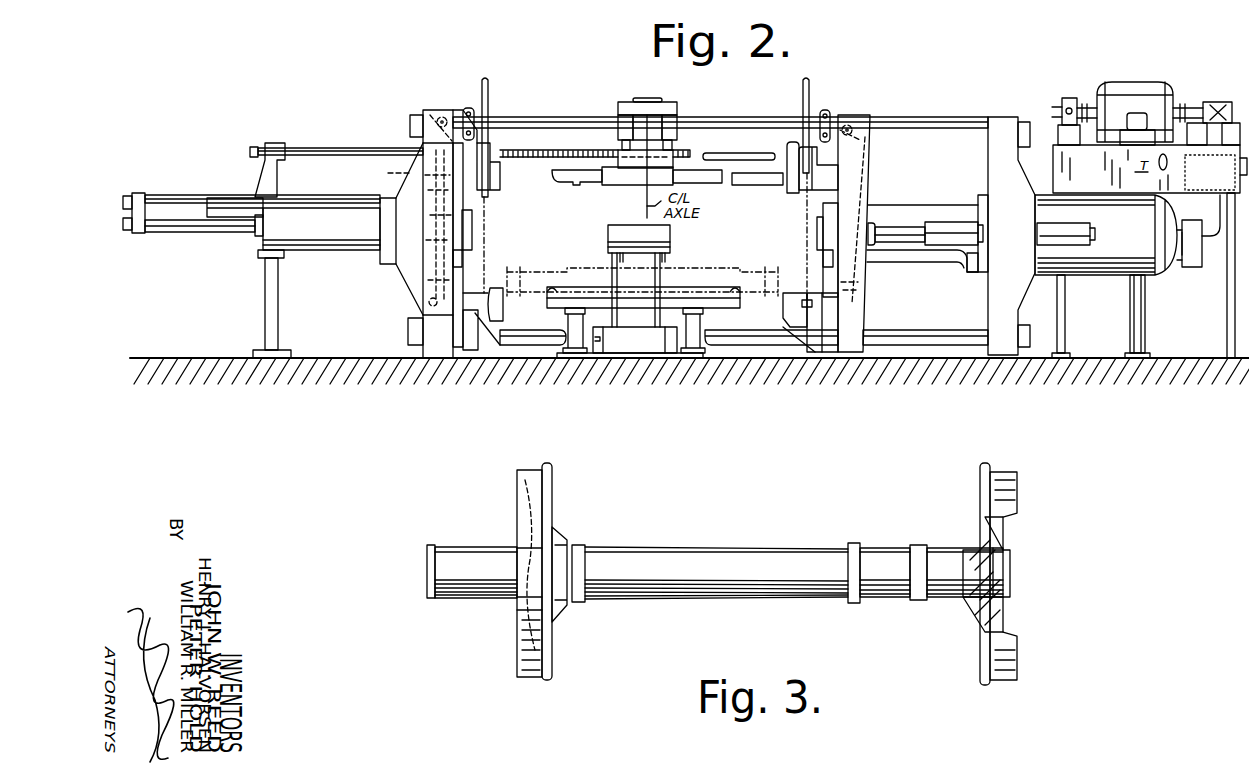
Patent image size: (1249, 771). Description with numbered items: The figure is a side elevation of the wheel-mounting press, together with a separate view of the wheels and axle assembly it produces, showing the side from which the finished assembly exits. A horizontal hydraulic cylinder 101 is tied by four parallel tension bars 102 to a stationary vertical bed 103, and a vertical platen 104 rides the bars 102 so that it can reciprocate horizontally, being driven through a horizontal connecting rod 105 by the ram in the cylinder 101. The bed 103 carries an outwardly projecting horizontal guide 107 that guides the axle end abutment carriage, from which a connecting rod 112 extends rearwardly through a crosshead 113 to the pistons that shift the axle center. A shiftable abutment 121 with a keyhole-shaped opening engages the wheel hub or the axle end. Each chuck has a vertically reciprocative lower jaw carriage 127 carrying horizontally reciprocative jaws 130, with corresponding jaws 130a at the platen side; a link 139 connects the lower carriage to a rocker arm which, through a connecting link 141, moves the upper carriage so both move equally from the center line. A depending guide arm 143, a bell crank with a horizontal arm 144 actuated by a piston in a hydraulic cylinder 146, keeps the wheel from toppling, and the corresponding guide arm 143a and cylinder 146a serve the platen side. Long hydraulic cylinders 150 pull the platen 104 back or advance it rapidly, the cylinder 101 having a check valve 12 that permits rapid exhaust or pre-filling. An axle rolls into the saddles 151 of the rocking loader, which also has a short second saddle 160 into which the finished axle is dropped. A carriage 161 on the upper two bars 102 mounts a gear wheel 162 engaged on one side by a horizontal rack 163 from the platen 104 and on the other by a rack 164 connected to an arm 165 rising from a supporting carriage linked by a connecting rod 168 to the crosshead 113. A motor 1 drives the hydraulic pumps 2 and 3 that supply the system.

The motor 1 is at (1134, 80).
The hydraulic pump 2 is at (1070, 98).
The hydraulic pump 3 is at (1220, 100).
The check valve 12 is at (1190, 268).
The hydraulic cylinder 101 is at (1090, 272).
The tension bars 102 is at (933, 119).
The stationary vertical bed 103 is at (407, 273).
The vertical platen 104 is at (858, 318).
The horizontal connecting rod 105 is at (917, 207).
The horizontal guide 107 is at (312, 246).
The connecting rod 112 is at (172, 233).
The crosshead 113 is at (131, 217).
The abutment 121 is at (474, 218).
The lower jaw carriage 127 is at (470, 353).
The horizontally reciprocative jaws 130 is at (504, 306).
The horizontally reciprocative jaws 130a is at (785, 302).
The link 139 is at (384, 173).
The connecting link 141 is at (452, 128).
The depending guide arm 143 is at (501, 178).
The depending guide arm 143a is at (790, 190).
The horizontal arm 144 is at (497, 133).
The hydraulic cylinder 146 is at (490, 90).
The hydraulic cylinder 146a is at (812, 102).
The long hydraulic cylinders 150 is at (1073, 228).
The saddles 151 is at (665, 296).
The second saddle 160 is at (669, 243).
The carriage 161 is at (666, 100).
The gear wheel 162 is at (616, 180).
The horizontal rack 163 is at (737, 150).
The rack 164 is at (348, 147).
The arm 165 is at (276, 150).
The connecting rod 168 is at (180, 194).